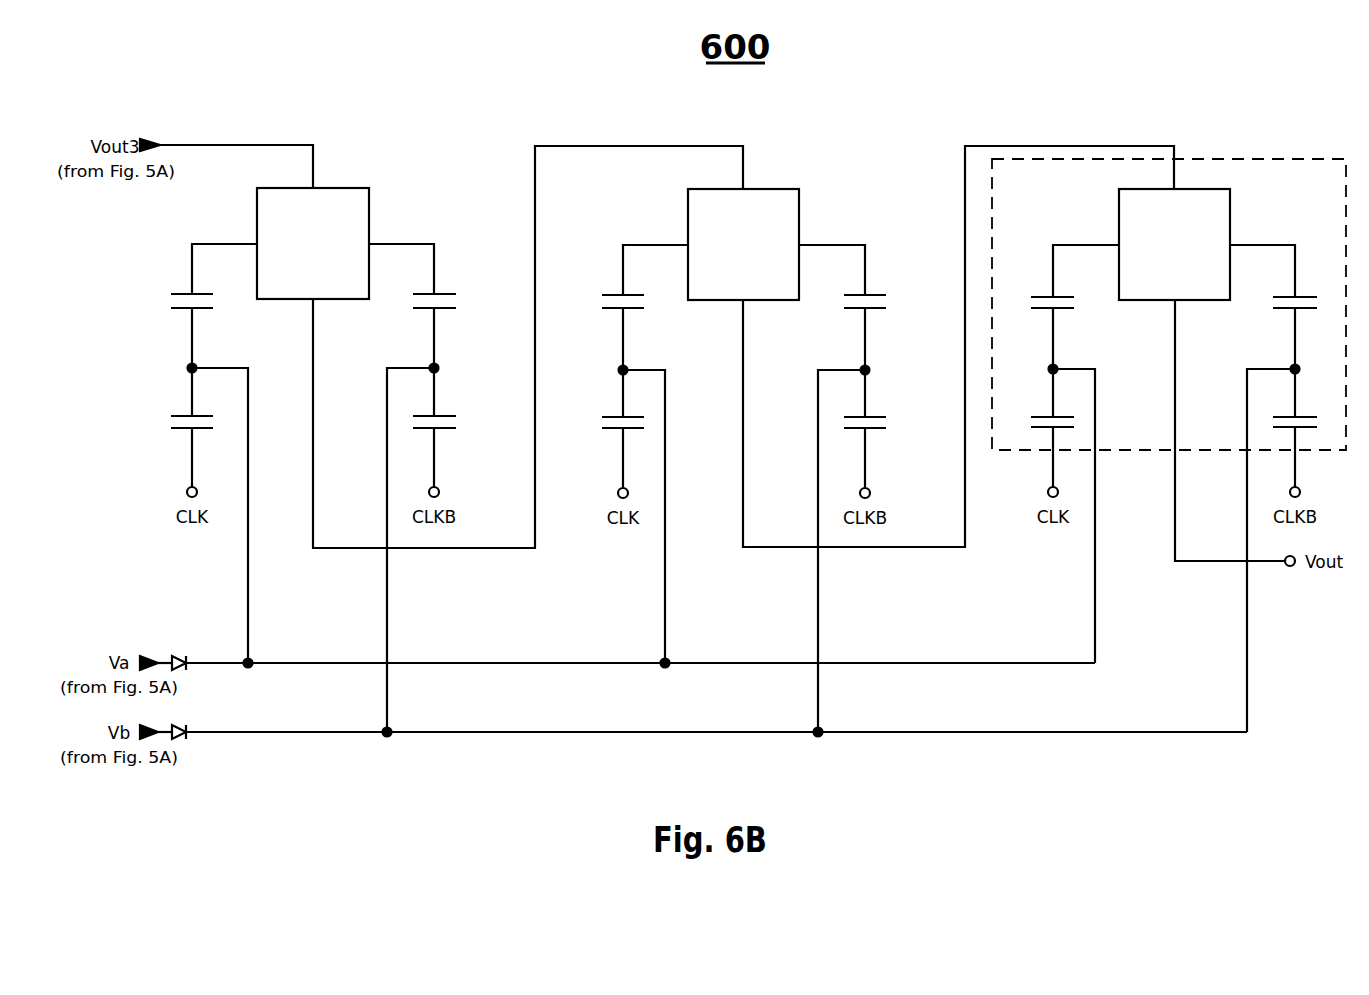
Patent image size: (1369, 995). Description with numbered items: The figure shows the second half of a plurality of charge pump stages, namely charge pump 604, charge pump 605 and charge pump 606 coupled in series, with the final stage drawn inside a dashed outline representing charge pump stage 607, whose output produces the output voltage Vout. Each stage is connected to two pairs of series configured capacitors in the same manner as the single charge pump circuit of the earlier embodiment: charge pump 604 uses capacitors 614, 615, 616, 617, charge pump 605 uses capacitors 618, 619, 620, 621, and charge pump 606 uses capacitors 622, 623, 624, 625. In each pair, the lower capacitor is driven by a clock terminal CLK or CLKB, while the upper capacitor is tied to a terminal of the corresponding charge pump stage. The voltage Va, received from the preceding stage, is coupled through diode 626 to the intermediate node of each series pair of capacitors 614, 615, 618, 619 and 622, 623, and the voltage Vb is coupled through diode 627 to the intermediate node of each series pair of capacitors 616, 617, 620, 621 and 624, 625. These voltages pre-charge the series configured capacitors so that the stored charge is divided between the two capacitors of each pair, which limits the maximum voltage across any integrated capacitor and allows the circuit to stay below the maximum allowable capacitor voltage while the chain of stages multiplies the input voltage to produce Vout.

The charge pump 604 is at (375, 191).
The charge pump 605 is at (805, 191).
The charge pump 606 is at (1235, 191).
The charge pump stage 607 is at (1252, 159).
The capacitor 614 is at (170, 290).
The capacitor 615 is at (170, 410).
The capacitor 616 is at (460, 290).
The capacitor 617 is at (460, 408).
The capacitor 618 is at (605, 291).
The capacitor 619 is at (605, 408).
The capacitor 620 is at (890, 291).
The capacitor 621 is at (890, 408).
The capacitor 622 is at (1040, 297).
The capacitor 623 is at (1040, 417).
The capacitor 624 is at (1308, 297).
The capacitor 625 is at (1308, 417).
The diode 626 is at (178, 657).
The diode 627 is at (178, 727).